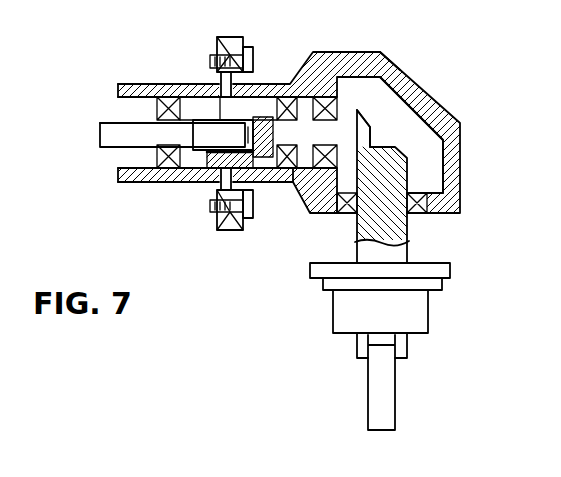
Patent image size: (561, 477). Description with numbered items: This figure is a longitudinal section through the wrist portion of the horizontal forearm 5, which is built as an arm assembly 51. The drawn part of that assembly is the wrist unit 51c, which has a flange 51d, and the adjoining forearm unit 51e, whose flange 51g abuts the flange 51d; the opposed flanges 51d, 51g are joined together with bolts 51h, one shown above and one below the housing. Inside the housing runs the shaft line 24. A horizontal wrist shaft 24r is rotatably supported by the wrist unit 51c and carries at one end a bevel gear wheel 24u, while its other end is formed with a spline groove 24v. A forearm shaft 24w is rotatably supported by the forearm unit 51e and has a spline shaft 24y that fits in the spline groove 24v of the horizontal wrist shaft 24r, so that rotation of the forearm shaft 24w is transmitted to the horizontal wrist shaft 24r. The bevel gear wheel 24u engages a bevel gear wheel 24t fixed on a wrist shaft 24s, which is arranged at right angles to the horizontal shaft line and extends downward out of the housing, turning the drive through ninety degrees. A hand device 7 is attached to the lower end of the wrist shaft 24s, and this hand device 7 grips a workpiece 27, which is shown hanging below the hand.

The wrist section 24 is at (203, 117).
The forearm shaft 24w is at (107, 122).
The spline shaft 24y is at (197, 130).
The spline groove 24v is at (257, 150).
The horizontal wrist shaft 24r is at (303, 165).
The wrist shaft 24s is at (358, 237).
The bevel gear wheel 24t is at (400, 148).
The bevel gear wheel 24u is at (373, 127).
The arm assembly 51 is at (228, 37).
The wrist unit 51c is at (387, 51).
The flange 51d is at (247, 40).
The forearm unit 51e is at (155, 182).
The flange 51g is at (215, 38).
The bolt 51h is at (247, 218).
The horizontal forearm 5 is at (226, 232).
The hand device 7 is at (427, 330).
The workpiece 27 is at (395, 418).